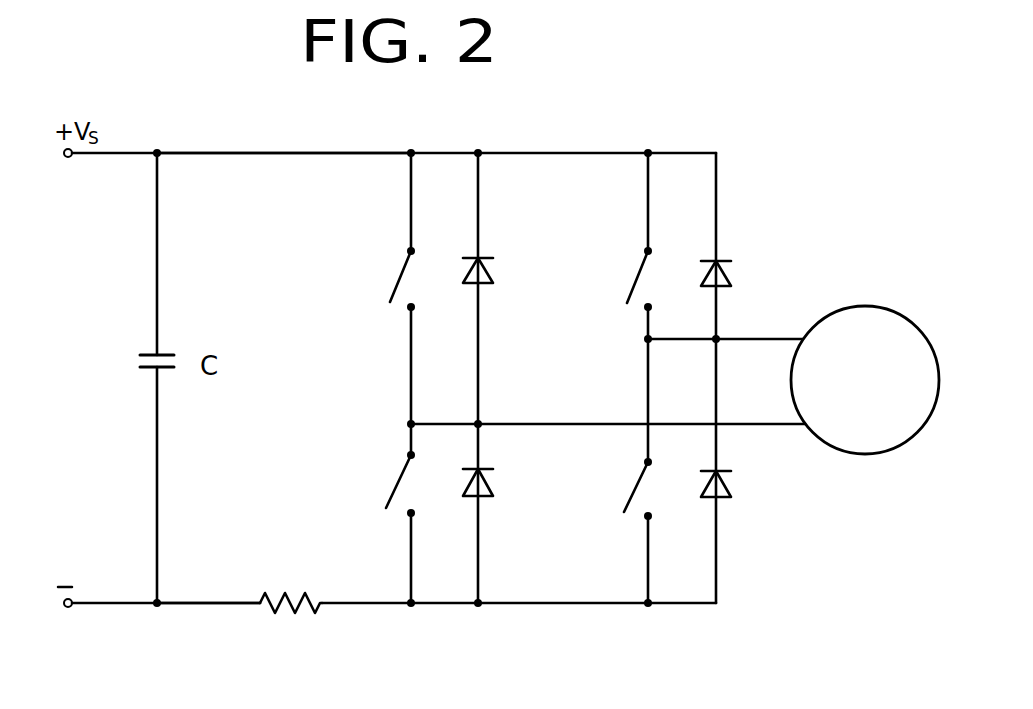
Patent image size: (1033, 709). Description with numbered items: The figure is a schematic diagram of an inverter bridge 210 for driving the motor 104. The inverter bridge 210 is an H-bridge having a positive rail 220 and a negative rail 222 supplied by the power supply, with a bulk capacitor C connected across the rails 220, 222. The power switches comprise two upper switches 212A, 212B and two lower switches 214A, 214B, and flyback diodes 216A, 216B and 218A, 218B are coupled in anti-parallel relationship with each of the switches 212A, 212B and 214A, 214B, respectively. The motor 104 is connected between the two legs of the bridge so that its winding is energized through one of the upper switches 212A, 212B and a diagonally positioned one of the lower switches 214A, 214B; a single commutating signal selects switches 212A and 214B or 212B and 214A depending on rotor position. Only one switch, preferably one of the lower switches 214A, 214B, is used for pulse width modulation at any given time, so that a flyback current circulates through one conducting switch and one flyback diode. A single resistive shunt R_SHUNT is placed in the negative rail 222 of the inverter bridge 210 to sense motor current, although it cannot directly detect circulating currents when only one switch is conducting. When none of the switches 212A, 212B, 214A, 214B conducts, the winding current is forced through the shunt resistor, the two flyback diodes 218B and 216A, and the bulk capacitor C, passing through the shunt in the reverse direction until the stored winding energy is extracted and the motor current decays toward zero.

The motor 104 is at (862, 307).
The inverter bridge 210 is at (686, 654).
The upper switch 212A is at (402, 272).
The upper switch 212B is at (640, 272).
The lower switch 214A is at (400, 479).
The lower switch 214B is at (631, 491).
The flyback diode 216A is at (493, 270).
The flyback diode 216B is at (727, 273).
The flyback diode 218A is at (490, 484).
The flyback diode 218B is at (728, 484).
The positive rail 220 is at (220, 153).
The negative rail 222 is at (196, 603).